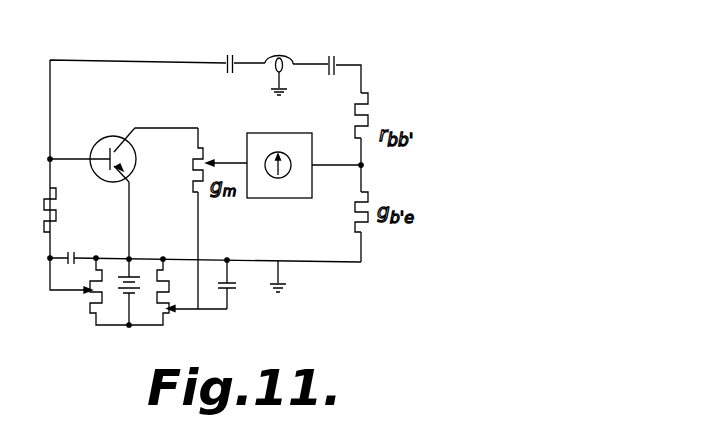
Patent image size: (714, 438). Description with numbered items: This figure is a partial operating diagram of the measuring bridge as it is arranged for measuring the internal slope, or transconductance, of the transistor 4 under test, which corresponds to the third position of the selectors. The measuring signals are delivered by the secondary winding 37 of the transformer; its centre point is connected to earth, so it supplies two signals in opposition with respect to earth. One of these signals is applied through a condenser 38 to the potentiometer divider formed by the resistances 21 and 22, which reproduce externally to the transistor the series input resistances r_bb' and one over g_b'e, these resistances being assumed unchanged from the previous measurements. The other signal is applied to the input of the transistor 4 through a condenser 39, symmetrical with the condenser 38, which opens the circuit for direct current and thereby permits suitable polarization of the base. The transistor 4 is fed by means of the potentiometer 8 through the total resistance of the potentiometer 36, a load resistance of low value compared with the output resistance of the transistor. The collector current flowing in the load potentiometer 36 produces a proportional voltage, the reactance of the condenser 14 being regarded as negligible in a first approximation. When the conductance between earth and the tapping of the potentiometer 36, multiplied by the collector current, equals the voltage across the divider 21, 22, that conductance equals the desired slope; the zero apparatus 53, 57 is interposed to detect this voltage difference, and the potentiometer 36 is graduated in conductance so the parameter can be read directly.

The transistor 4 is at (92, 148).
The potentiometer 8 is at (160, 309).
The condenser 14 is at (231, 291).
The resistance 21 is at (369, 99).
The resistance 22 is at (366, 234).
The potentiometer 36 is at (194, 172).
The secondary winding 37 is at (280, 56).
The condenser 38 is at (333, 57).
The condenser 39 is at (230, 55).
The zero apparatus 53 is at (278, 201).
The zero apparatus 57 is at (288, 175).